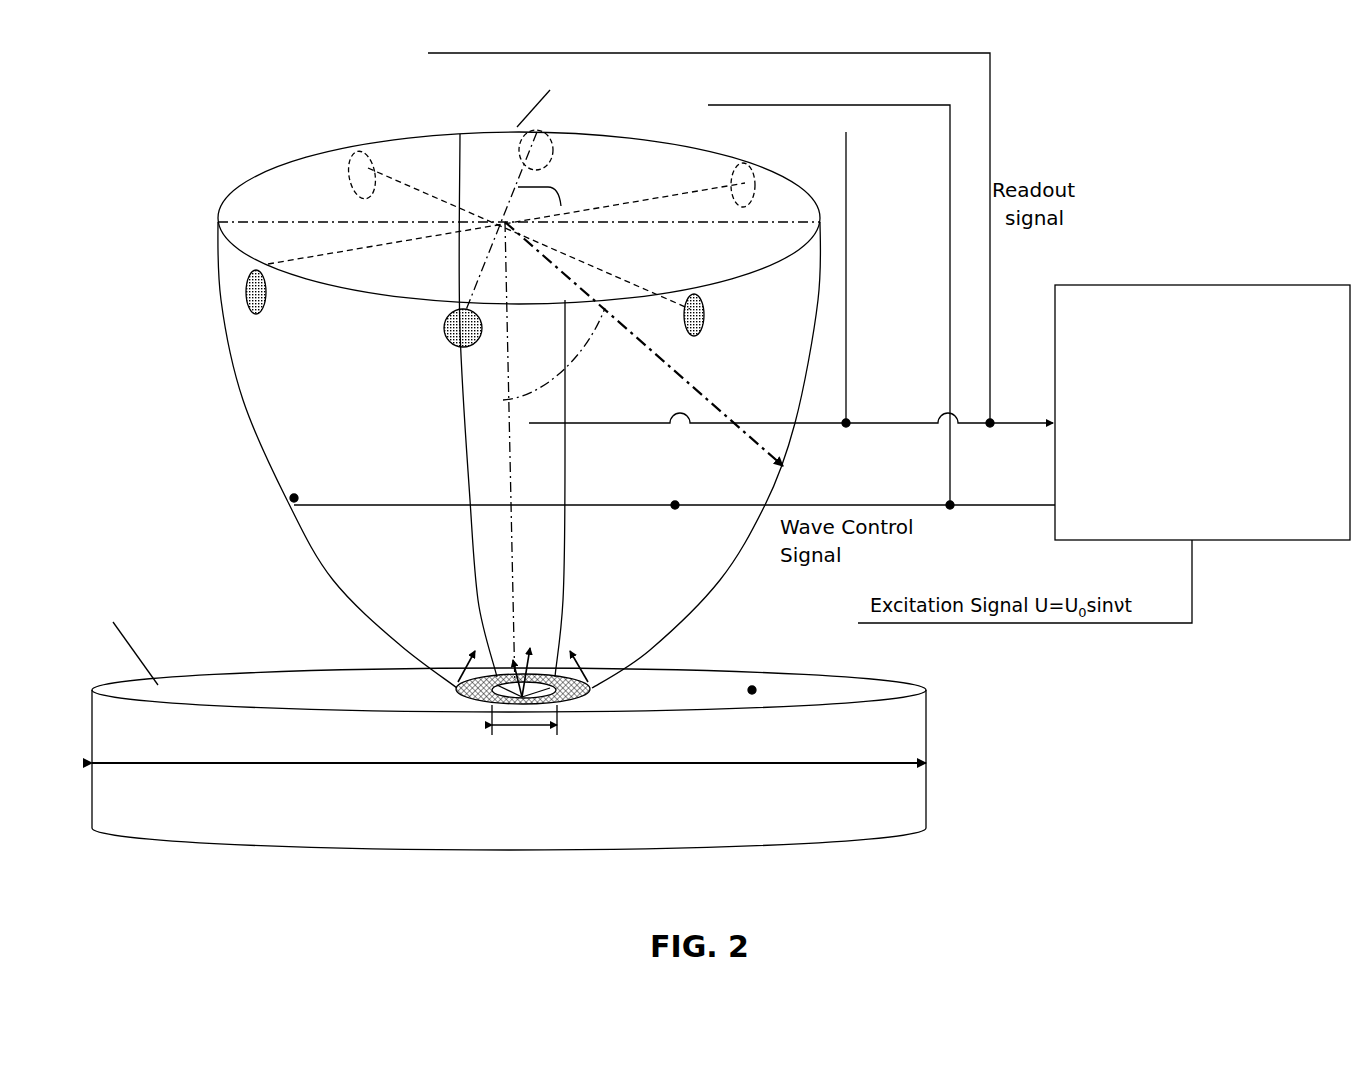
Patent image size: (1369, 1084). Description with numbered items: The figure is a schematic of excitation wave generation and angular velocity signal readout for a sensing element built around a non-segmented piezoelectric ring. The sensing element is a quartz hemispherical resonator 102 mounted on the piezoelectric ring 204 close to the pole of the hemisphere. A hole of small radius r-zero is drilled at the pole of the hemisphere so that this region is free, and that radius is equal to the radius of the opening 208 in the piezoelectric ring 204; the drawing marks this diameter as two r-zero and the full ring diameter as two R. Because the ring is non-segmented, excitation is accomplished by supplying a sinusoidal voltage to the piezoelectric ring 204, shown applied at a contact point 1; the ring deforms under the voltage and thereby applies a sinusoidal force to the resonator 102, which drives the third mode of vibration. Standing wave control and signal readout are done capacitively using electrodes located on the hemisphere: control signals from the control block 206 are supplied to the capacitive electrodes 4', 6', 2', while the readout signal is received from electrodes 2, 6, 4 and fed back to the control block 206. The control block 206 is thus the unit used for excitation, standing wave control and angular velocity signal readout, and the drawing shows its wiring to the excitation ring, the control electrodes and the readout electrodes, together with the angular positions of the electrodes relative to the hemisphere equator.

The excitation electrode contact point 1 is at (858, 623).
The readout electrode 2 is at (613, 135).
The control electrode 2' is at (464, 365).
The readout electrode 4 is at (788, 169).
The control electrode 4' is at (270, 383).
The readout electrode 6 is at (705, 398).
The control electrode 6' is at (370, 128).
The hemispherical resonator 102 is at (227, 362).
The piezoelectric ring 204 is at (926, 740).
The control block 206 is at (1237, 285).
The opening 208 is at (522, 780).